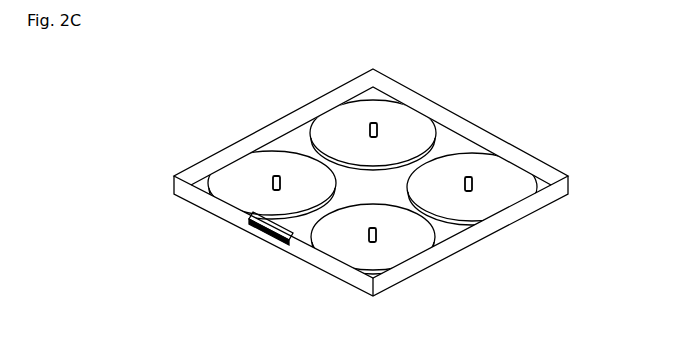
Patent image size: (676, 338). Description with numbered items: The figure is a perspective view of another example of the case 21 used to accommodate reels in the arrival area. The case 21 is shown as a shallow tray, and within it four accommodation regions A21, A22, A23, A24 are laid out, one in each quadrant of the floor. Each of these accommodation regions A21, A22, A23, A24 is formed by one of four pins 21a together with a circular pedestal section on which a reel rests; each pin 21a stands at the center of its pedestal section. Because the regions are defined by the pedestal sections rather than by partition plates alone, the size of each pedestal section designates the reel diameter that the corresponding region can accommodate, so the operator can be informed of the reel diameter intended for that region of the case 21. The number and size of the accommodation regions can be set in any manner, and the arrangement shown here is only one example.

The case 21 is at (582, 166).
The pin 21a is at (378, 128).
The accommodation region A21 is at (383, 117).
The accommodation region A22 is at (488, 172).
The accommodation region A23 is at (271, 198).
The accommodation region A24 is at (363, 246).